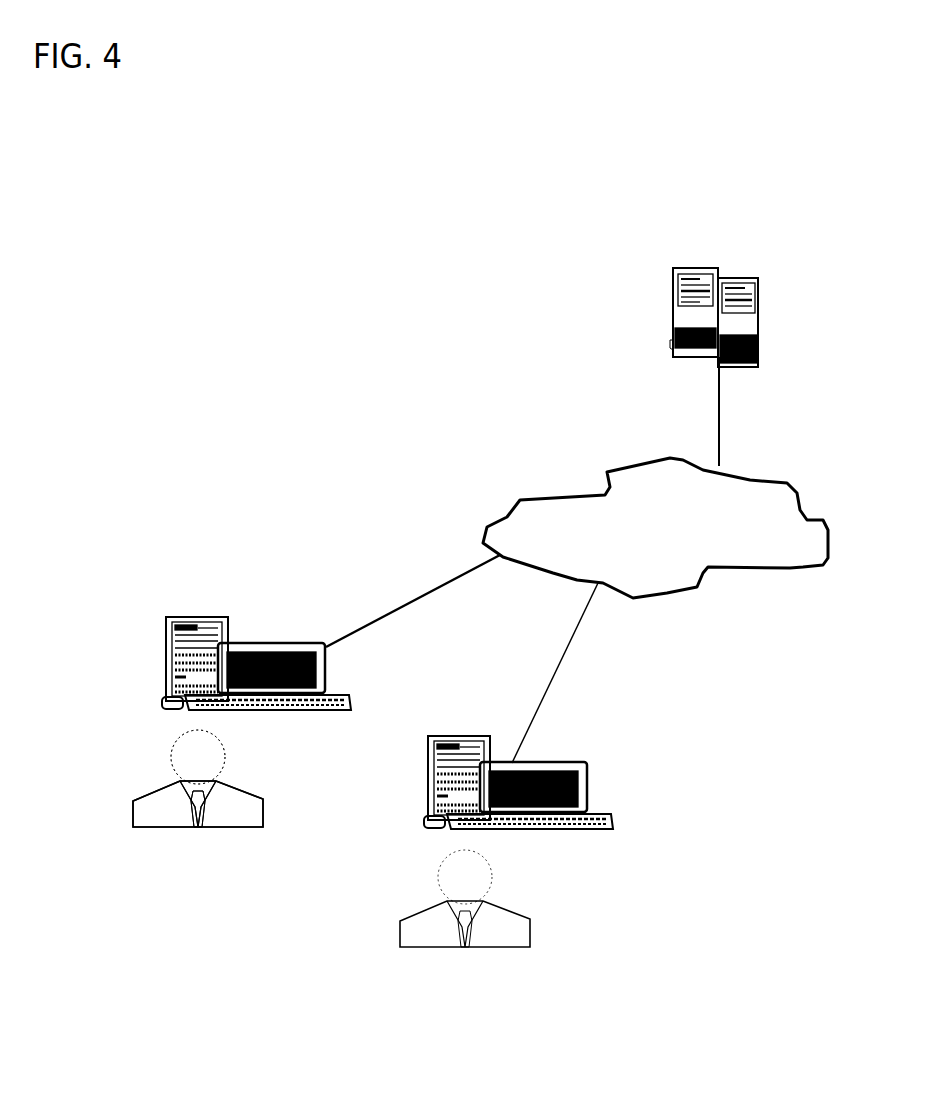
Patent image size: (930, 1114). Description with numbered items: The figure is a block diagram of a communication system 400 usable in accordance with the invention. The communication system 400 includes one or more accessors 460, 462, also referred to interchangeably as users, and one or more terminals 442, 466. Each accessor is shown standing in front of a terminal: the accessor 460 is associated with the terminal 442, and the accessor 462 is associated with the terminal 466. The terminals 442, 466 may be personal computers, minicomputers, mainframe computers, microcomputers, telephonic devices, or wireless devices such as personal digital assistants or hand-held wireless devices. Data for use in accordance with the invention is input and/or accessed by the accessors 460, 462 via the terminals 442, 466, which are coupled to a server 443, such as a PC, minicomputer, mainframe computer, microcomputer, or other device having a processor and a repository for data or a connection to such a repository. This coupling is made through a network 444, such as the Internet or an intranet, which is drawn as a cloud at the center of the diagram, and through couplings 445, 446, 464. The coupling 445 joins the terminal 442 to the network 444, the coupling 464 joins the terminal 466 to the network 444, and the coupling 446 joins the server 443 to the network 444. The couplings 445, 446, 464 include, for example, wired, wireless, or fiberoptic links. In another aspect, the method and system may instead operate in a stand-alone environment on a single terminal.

The communication system 400 is at (260, 303).
The terminal 442 is at (167, 618).
The server 443 is at (753, 278).
The network 444 is at (609, 487).
The coupling 445 is at (415, 600).
The coupling 446 is at (717, 410).
The accessor 460 is at (157, 790).
The accessor 462 is at (530, 923).
The coupling 464 is at (558, 662).
The terminal 466 is at (582, 790).